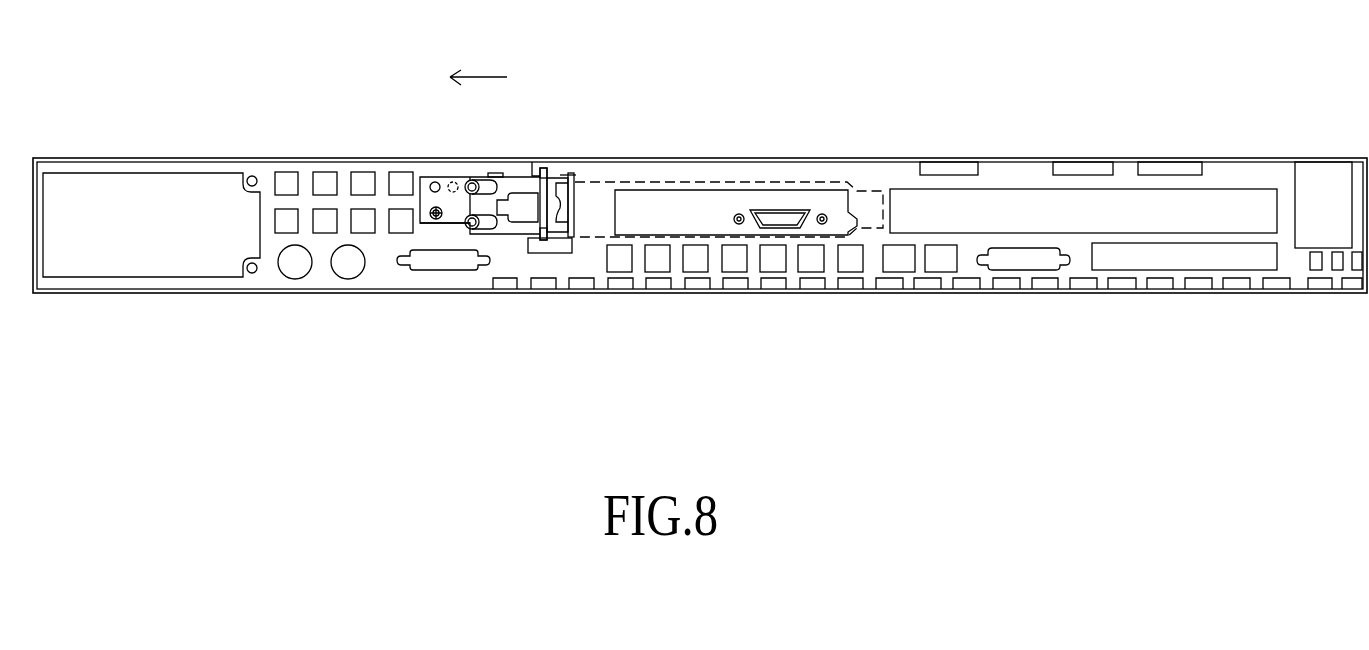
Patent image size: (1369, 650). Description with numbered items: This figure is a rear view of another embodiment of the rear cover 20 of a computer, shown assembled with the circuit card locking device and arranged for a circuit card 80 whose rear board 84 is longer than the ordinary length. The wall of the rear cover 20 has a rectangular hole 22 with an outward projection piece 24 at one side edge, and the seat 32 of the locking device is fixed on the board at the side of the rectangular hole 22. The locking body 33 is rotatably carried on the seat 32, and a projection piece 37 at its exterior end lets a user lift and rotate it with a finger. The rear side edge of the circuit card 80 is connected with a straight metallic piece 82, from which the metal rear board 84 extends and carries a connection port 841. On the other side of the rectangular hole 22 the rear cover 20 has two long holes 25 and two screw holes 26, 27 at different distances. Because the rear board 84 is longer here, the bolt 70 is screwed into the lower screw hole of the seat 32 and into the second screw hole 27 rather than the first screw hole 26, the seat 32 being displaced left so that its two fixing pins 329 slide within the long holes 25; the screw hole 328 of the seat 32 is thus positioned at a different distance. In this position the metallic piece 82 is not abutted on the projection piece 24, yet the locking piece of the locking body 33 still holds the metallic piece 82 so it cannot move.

The rear cover 20 is at (1018, 168).
The rectangular hole 22 is at (552, 253).
The projection piece 24 is at (570, 198).
The long hole 25 is at (493, 177).
The screw hole 26 is at (453, 182).
The screw hole 27 is at (434, 219).
The seat 32 is at (456, 220).
The locking body 33 is at (550, 198).
The projection piece 37 is at (573, 240).
The bolt 70 is at (437, 219).
The circuit card 80 is at (857, 212).
The metallic piece 82 is at (545, 172).
The rear board 84 is at (677, 181).
The connection port 841 is at (788, 208).
The screw hole 328 is at (430, 186).
The fixing pin 329 is at (472, 177).